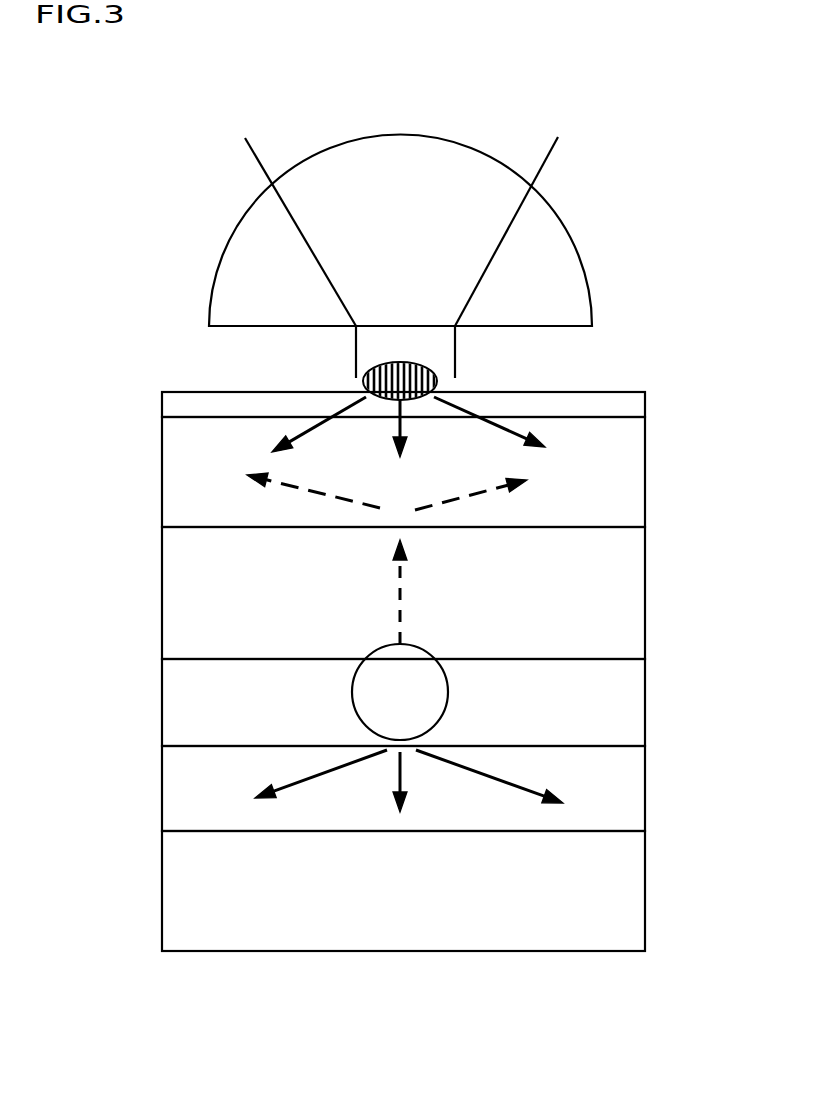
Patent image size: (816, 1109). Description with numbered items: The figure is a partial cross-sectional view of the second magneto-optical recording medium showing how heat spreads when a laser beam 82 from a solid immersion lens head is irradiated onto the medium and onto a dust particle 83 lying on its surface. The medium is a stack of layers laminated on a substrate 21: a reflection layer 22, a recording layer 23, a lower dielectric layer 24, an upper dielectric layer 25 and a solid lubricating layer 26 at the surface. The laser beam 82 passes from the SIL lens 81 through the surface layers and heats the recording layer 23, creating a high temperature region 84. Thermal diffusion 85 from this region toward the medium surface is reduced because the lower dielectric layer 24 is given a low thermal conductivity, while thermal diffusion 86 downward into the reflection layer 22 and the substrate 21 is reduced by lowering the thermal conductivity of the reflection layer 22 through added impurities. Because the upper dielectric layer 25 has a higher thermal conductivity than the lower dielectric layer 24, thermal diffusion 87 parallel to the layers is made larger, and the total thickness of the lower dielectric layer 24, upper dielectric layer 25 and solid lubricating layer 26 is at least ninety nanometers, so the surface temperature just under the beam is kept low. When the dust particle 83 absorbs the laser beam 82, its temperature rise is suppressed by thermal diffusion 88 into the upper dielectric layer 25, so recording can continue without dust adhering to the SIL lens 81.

The substrate 21 is at (645, 878).
The reflection layer 22 is at (645, 790).
The recording layer 23 is at (645, 703).
The lower dielectric layer 24 is at (645, 588).
The upper dielectric layer 25 is at (645, 469).
The solid lubricating layer 26 is at (645, 413).
The SIL lens 81 is at (570, 228).
The laser beam 82 is at (401, 243).
The dust particle 83 is at (367, 377).
The high temperature region 84 is at (400, 692).
The thermal diffusion 85 is at (418, 592).
The thermal diffusion 86 is at (409, 784).
The thermal diffusion 87 is at (383, 497).
The thermal diffusion 88 is at (408, 427).